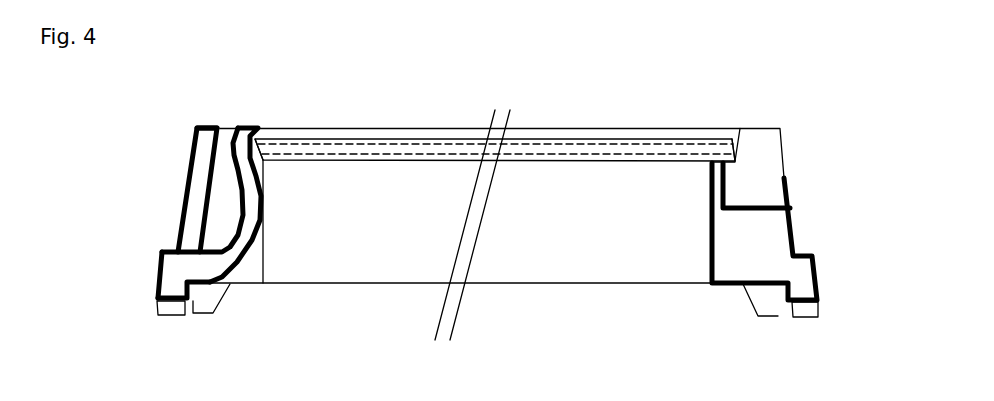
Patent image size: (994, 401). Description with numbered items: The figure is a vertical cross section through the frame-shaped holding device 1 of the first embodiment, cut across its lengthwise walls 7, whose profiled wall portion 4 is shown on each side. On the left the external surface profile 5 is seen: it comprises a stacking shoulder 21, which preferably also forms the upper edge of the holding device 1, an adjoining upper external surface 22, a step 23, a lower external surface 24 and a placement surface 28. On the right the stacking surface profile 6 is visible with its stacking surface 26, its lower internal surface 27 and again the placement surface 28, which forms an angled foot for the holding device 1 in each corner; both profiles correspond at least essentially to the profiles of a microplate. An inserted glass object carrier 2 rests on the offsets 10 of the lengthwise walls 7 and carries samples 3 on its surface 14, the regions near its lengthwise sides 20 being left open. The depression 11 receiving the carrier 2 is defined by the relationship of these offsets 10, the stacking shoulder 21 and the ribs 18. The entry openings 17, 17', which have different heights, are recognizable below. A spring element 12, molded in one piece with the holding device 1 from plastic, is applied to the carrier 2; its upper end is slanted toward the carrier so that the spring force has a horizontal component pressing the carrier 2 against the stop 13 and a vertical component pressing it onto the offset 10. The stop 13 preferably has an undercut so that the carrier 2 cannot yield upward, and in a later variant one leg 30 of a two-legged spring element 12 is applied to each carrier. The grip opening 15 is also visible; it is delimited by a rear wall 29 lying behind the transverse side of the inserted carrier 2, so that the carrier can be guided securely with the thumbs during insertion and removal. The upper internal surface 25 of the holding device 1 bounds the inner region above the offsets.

The holding device 1 is at (75, 128).
The object carrier 2 is at (495, 107).
The samples 3 is at (495, 107).
The surface 14 is at (597, 127).
The holding profile 4 is at (455, 175).
The external surface profile 5 is at (80, 229).
The stacking surface profile 6 is at (284, 334).
The lengthwise walls 7 is at (186, 290).
The offsets 10 is at (269, 142).
The depression 11 is at (462, 146).
The spring element 12 is at (313, 198).
The leg 30 is at (265, 191).
The stop 13 is at (734, 121).
The grip opening 15 is at (760, 176).
The entry opening 17 is at (492, 336).
The entry opening 17' is at (494, 241).
The ribs 18 is at (543, 130).
The lengthwise sides 20 is at (253, 127).
The stacking shoulder 21 is at (188, 120).
The upper external surface 22 is at (177, 174).
The step 23 is at (147, 250).
The lower external surface 24 is at (142, 279).
The upper internal surface 25 is at (409, 266).
The stacking surface 26 is at (753, 307).
The lower internal surface 27 is at (203, 308).
The placement surface 28 is at (149, 325).
The rear wall 29 is at (717, 187).